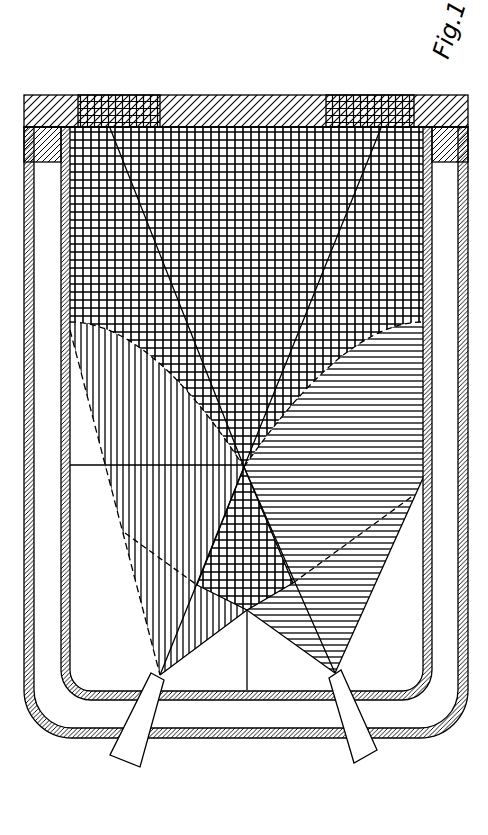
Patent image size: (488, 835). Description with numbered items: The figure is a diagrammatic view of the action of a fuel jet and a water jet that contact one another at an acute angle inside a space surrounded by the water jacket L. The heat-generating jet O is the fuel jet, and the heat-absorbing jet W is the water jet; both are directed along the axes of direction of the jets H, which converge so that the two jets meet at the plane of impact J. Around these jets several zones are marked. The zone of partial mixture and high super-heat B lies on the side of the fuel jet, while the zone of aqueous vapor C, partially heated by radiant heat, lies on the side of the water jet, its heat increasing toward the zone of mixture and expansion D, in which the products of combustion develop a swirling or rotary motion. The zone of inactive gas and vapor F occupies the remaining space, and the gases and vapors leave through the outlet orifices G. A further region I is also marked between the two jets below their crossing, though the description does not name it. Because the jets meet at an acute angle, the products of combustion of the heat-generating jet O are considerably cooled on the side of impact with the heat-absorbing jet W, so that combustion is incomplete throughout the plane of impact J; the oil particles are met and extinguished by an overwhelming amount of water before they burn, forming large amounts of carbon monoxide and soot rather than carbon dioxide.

The water jacket L is at (246, 416).
The zone of aqueous vapor C is at (158, 385).
The outlet orifices G is at (370, 111).
The zone of mixture and expansion D is at (246, 297).
The zone of partial mixture and high super-heat B is at (333, 497).
The lower overlap region I is at (209, 538).
The zone of inactive gas and vapor F is at (222, 400).
The axes of direction of the jets H is at (270, 401).
The plane of impact J is at (202, 577).
The heat-absorbing jet W is at (146, 723).
The heat-generating jet O is at (370, 719).